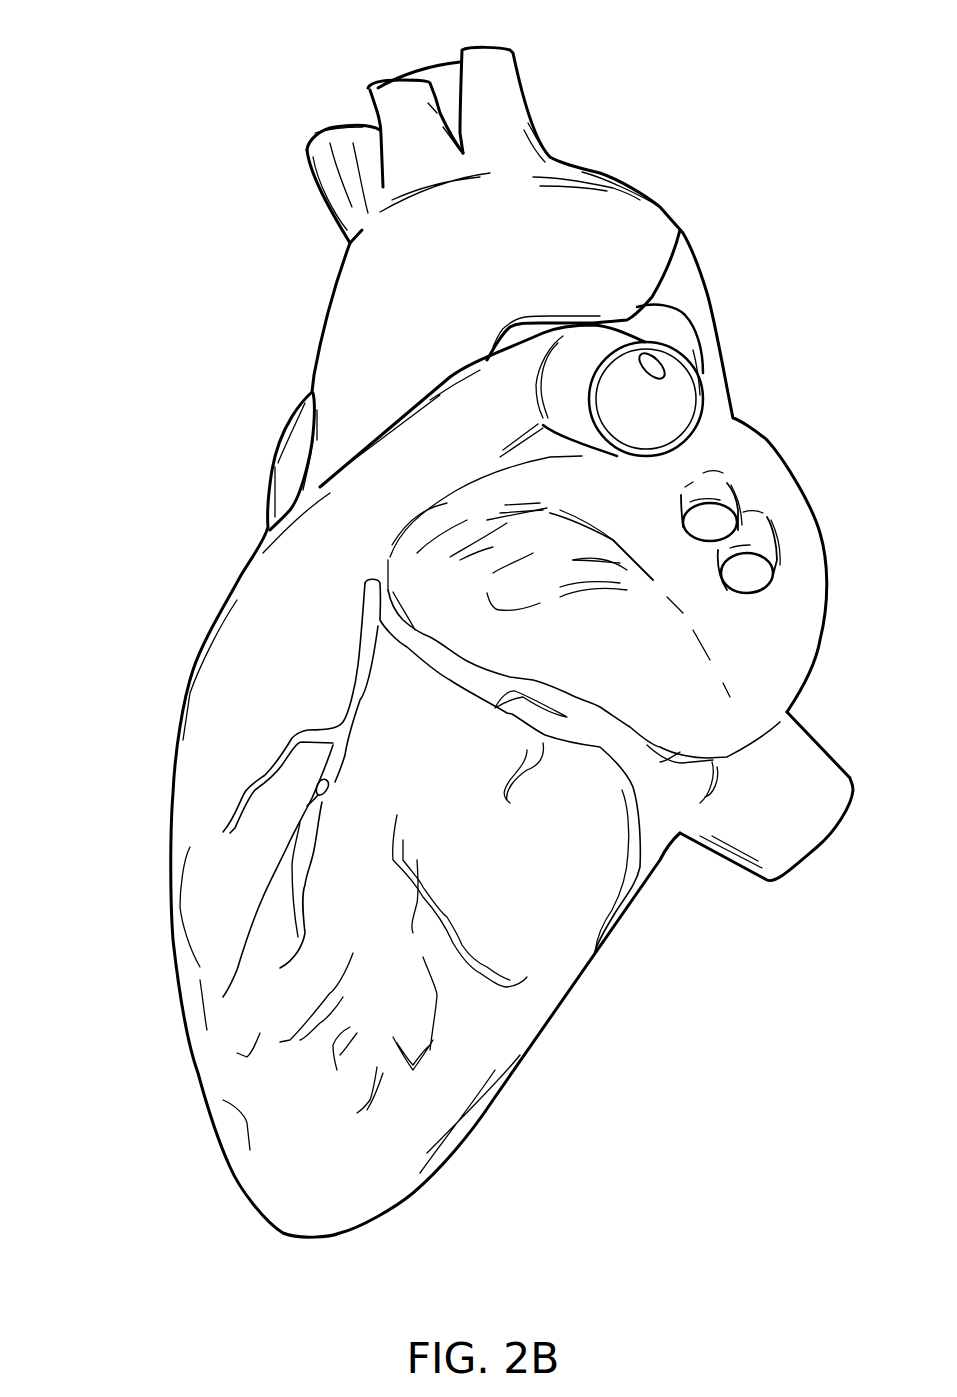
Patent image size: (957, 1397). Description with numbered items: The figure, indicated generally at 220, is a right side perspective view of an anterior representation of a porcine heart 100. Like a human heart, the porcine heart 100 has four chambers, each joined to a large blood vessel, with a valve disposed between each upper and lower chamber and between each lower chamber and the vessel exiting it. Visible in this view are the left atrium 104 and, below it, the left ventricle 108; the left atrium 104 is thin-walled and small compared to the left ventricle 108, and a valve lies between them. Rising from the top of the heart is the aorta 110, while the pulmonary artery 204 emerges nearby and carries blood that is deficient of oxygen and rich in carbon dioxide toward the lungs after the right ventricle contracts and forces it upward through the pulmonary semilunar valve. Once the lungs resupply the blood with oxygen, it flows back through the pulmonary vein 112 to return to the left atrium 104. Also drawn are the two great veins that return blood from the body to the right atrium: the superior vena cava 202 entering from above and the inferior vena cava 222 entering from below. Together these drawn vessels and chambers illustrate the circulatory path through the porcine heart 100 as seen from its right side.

The porcine heart 100 is at (333, 1237).
The left atrium 104 is at (627, 510).
The left ventricle 108 is at (467, 857).
The aorta 110 is at (483, 263).
The pulmonary vein 112 is at (748, 583).
The superior vena cava 202 is at (428, 66).
The pulmonary artery 204 is at (672, 419).
The right side perspective view 220 is at (152, 333).
The inferior vena cava 222 is at (782, 817).